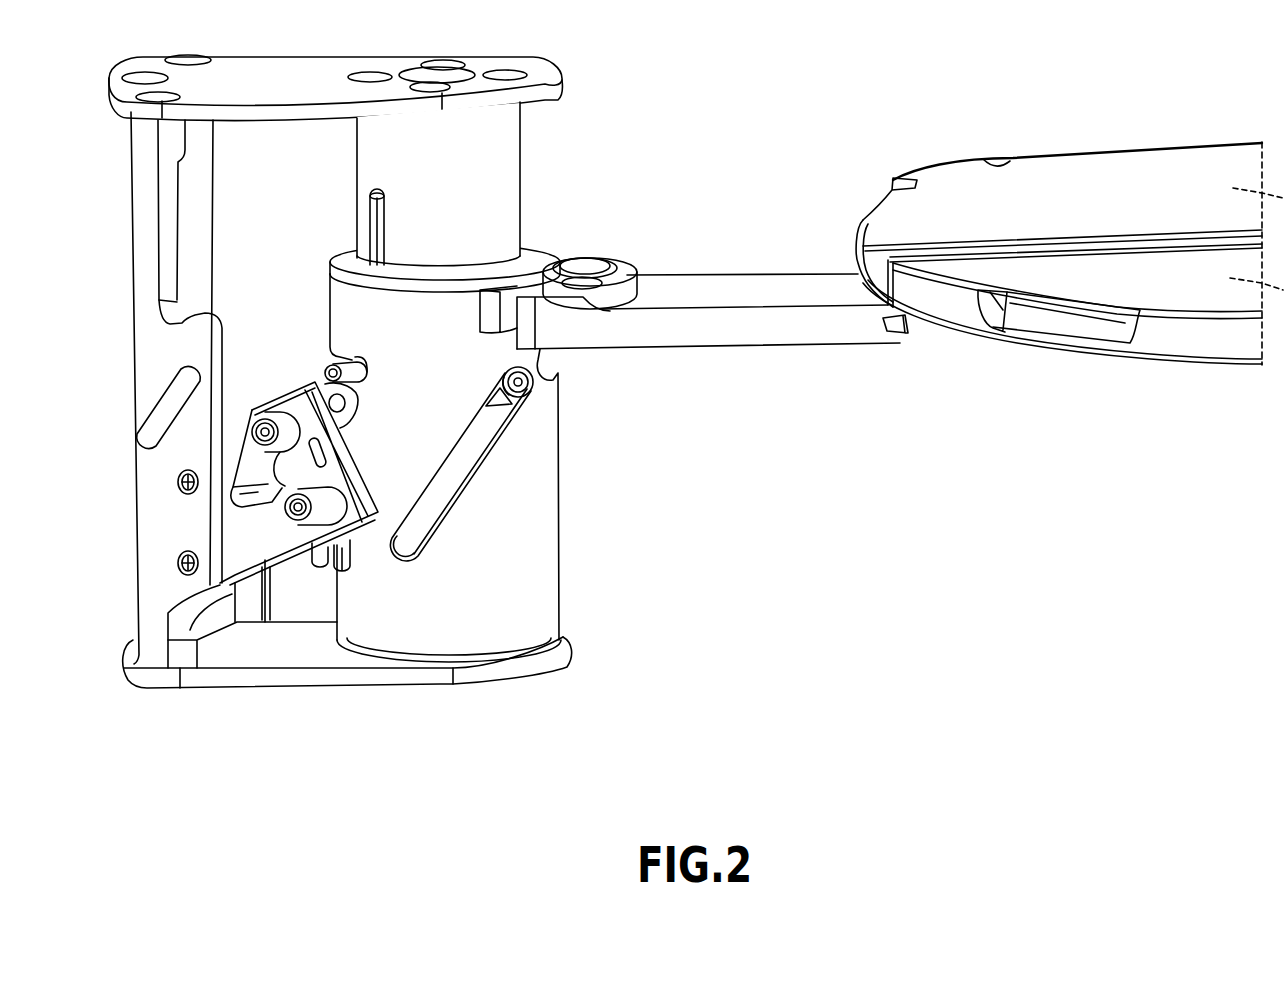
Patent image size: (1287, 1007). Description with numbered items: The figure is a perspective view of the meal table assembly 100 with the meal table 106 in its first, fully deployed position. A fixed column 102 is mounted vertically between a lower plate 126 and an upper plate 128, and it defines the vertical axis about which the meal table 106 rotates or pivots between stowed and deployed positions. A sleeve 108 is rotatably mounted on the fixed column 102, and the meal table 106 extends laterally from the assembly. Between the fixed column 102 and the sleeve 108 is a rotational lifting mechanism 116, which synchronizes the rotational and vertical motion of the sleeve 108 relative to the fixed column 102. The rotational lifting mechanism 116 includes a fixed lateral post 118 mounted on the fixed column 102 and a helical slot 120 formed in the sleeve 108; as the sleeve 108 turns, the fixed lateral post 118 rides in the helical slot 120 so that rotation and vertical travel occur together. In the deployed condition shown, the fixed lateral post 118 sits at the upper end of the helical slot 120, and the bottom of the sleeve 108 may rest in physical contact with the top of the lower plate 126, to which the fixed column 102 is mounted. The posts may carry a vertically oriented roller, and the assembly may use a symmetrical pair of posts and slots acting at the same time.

The meal table assembly 100 is at (832, 60).
The fixed column 102 is at (510, 172).
The meal table 106 is at (1115, 160).
The sleeve 108 is at (543, 606).
The rotational lifting mechanism 116 is at (497, 484).
The fixed lateral post 118 is at (528, 387).
The helical slot 120 is at (444, 488).
The lower plate 126 is at (281, 684).
The upper plate 128 is at (288, 57).